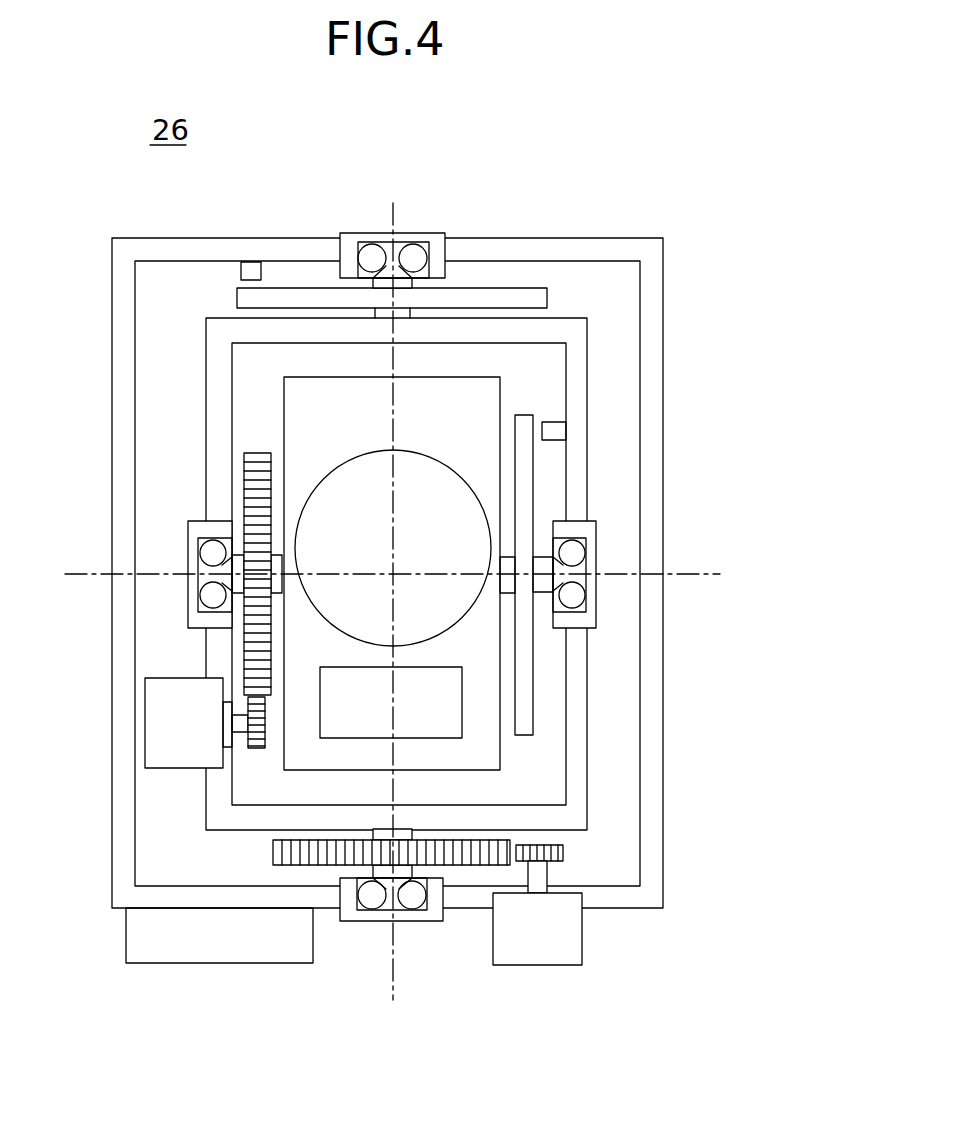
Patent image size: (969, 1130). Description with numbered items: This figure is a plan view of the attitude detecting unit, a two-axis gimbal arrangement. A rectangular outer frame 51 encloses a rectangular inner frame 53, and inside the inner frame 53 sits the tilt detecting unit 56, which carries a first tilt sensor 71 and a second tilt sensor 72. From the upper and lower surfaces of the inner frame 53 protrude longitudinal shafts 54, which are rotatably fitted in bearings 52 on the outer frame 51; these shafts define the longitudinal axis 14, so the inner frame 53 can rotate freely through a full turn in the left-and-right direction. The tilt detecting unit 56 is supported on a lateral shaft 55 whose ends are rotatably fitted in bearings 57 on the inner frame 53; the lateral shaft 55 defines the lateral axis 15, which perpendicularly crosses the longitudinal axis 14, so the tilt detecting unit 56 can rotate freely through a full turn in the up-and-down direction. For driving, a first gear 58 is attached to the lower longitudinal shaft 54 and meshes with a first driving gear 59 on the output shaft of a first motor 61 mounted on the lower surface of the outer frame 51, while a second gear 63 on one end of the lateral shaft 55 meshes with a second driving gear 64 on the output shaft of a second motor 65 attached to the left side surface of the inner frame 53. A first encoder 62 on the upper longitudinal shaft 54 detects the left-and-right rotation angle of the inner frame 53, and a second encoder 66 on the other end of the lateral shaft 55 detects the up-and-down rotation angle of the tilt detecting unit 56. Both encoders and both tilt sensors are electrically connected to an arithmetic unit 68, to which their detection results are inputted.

The longitudinal axis 14 is at (393, 213).
The lateral axis 15 is at (700, 574).
The outer frame 51 is at (602, 238).
The bearing 52 is at (433, 234).
The inner frame 53 is at (565, 318).
The longitudinal shaft 54 is at (420, 282).
The lateral shaft 55 is at (540, 543).
The tilt detecting unit 56 is at (502, 395).
The bearing 57 is at (188, 538).
The first gear 58 is at (272, 852).
The first driving gear 59 is at (563, 850).
The first motor 61 is at (583, 942).
The first encoder 62 is at (267, 279).
The second gear 63 is at (266, 453).
The second driving gear 64 is at (260, 750).
The second motor 65 is at (145, 748).
The second encoder 66 is at (545, 413).
The arithmetic unit 68 is at (210, 963).
The first tilt sensor 71 is at (415, 450).
The second tilt sensor 72 is at (435, 667).